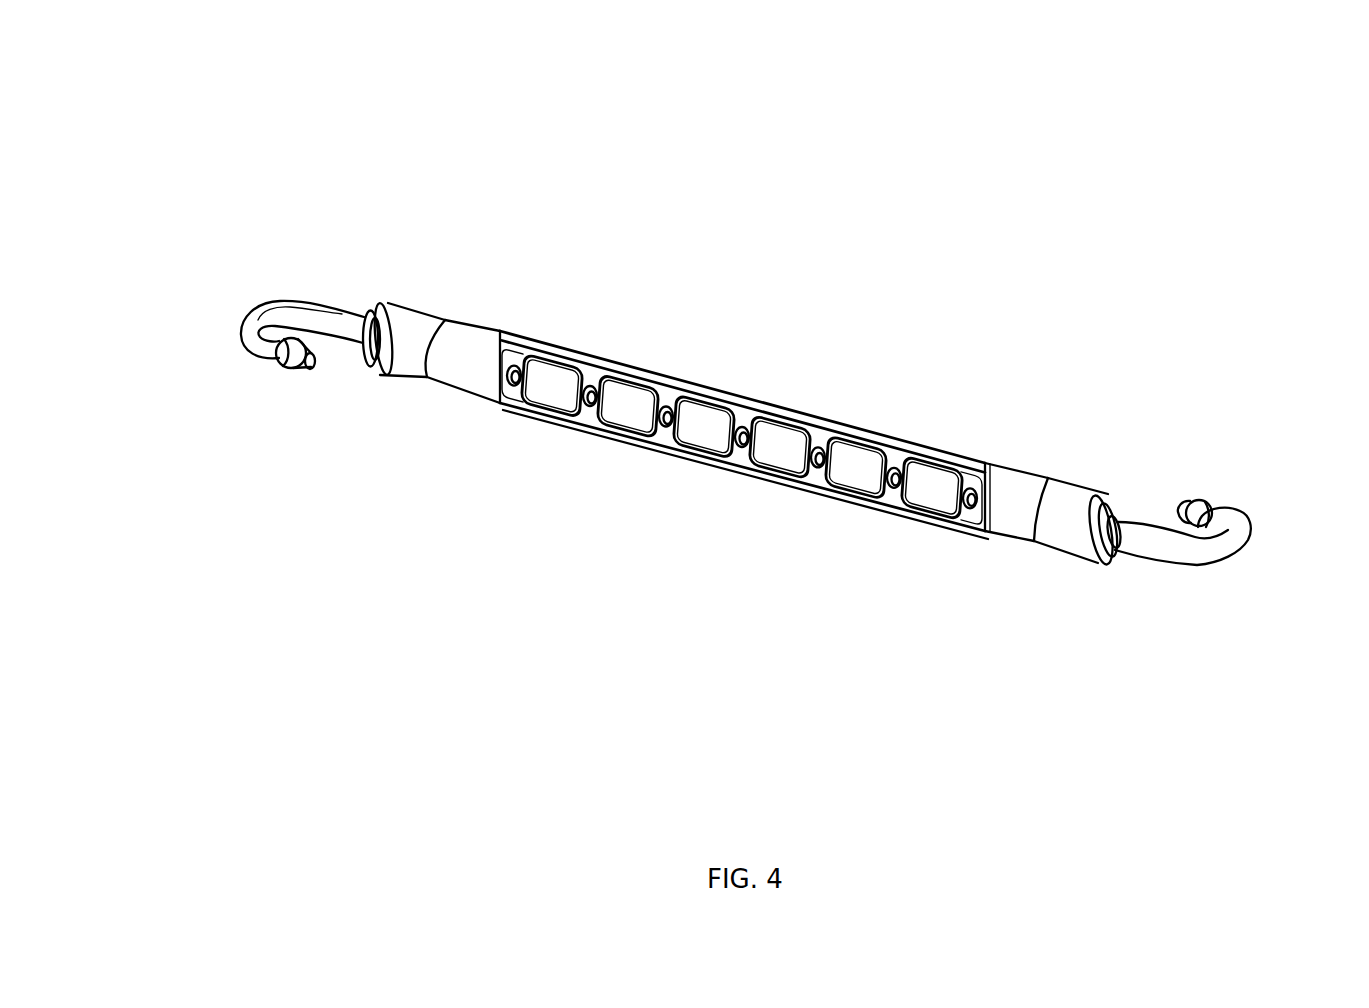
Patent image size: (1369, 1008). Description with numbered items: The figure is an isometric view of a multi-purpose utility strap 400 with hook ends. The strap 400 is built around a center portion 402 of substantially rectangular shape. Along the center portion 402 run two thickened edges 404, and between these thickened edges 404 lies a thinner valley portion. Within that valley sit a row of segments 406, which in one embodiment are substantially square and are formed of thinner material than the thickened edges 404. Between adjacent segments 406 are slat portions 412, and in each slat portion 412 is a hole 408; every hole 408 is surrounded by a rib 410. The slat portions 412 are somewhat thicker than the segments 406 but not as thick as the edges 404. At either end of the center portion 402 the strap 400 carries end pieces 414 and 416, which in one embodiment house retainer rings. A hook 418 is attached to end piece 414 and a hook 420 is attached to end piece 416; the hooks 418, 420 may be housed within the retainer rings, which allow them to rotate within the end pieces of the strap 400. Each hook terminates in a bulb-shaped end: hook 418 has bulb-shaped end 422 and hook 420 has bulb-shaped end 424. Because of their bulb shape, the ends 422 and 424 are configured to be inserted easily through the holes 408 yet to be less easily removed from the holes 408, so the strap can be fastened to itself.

The multi-purpose utility strap 400 is at (325, 152).
The center portion 402 is at (652, 322).
The thickened edges 404 is at (812, 420).
The segments 406 is at (937, 493).
The holes 408 is at (734, 467).
The rib 410 is at (600, 430).
The slat portions 412 is at (666, 404).
The end piece 414 is at (393, 337).
The end piece 416 is at (1060, 537).
The hook 418 is at (253, 331).
The hook 420 is at (1220, 553).
The bulb-shaped end 422 is at (281, 363).
The bulb-shaped end 424 is at (1198, 498).